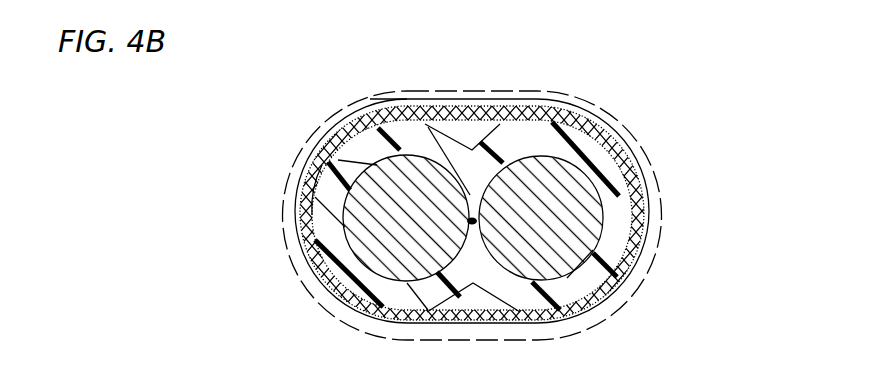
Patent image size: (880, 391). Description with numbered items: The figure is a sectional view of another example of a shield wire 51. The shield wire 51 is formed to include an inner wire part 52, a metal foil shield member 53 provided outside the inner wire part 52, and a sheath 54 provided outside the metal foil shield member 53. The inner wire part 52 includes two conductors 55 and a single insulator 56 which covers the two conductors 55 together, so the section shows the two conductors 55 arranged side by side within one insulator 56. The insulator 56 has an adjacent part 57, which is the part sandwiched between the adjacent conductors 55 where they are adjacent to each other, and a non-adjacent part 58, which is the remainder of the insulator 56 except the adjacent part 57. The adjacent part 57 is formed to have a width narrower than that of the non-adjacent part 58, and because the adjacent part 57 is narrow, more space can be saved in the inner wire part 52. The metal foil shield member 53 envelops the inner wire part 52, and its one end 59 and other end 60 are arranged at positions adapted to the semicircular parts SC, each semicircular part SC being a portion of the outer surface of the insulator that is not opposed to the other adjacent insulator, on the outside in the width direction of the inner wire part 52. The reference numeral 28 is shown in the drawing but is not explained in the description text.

The shield wire 51 is at (679, 141).
The inner wire part 52 is at (542, 40).
The metal foil shield member 53 is at (634, 264).
The sheath 54 is at (620, 306).
The conductors 55 is at (406, 178).
The insulator 56 is at (503, 143).
The adjacent part 57 is at (421, 318).
The non-adjacent part 58 is at (596, 152).
The one end 59 is at (304, 230).
The other end 60 is at (638, 222).
The drain wire 28 is at (384, 100).
The semicircular part SC is at (312, 172).